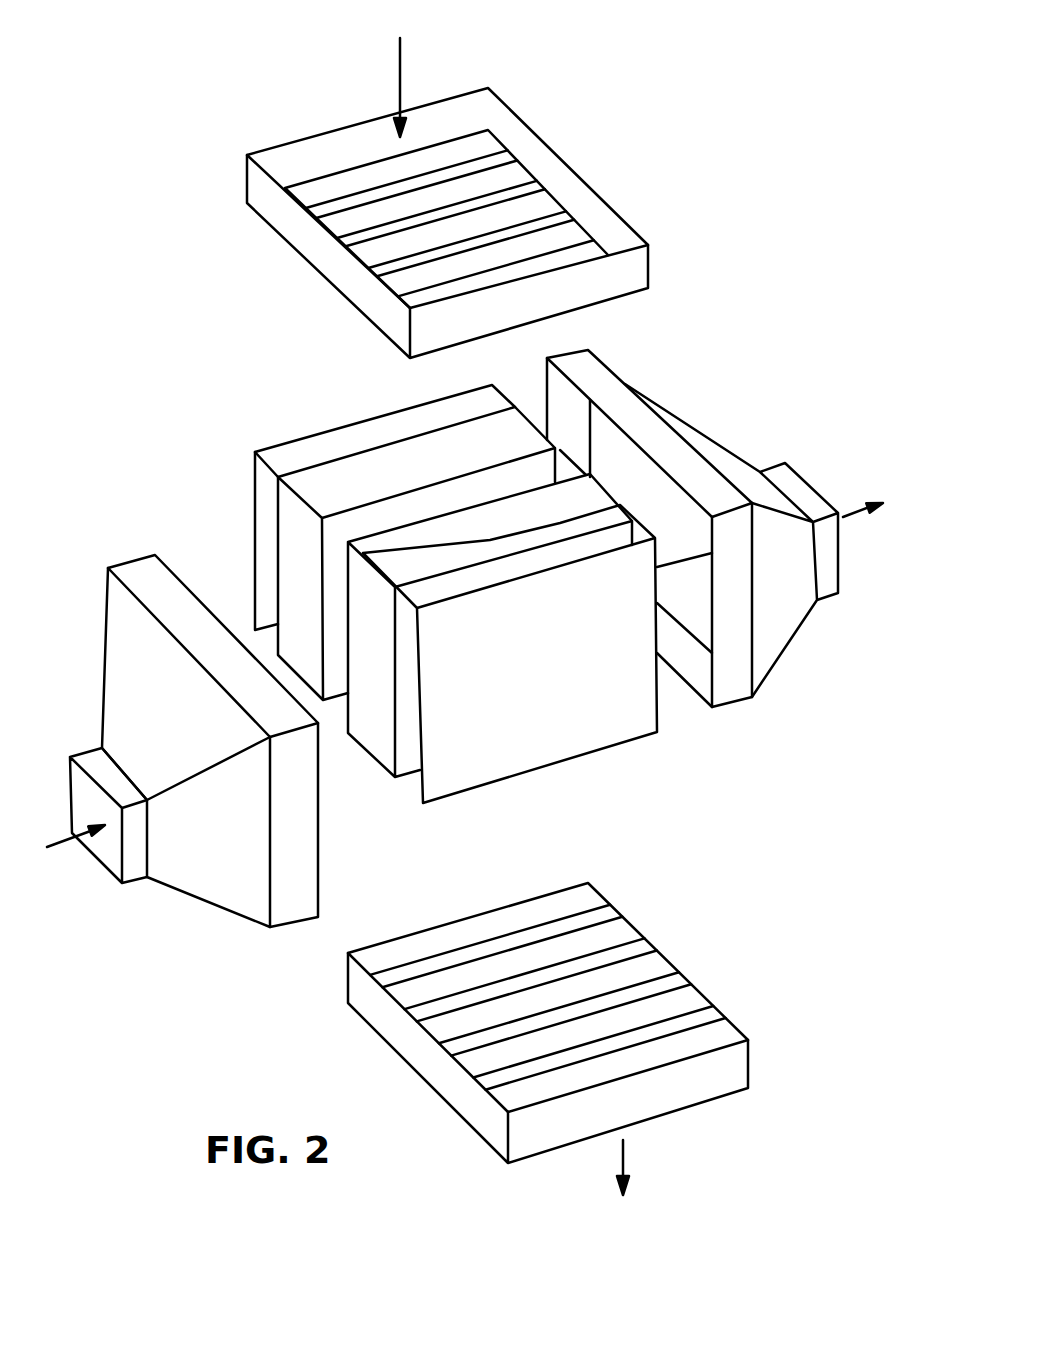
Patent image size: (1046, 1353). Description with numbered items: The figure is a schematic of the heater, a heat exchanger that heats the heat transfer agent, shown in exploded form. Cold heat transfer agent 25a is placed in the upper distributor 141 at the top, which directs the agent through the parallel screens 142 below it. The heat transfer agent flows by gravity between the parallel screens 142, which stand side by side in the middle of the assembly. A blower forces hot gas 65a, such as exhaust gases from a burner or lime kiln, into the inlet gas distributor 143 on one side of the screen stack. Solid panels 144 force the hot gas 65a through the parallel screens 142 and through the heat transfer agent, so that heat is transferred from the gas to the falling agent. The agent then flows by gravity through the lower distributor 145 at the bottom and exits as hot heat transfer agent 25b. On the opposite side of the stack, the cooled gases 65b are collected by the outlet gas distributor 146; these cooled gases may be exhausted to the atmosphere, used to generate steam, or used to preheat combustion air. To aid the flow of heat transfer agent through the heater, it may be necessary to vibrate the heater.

The cold heat transfer agent 25a is at (397, 73).
The hot heat transfer agent 25b is at (624, 1185).
The hot gas 65a is at (76, 853).
The cooled gases 65b is at (881, 503).
The upper distributor 141 is at (585, 178).
The parallel screens 142 is at (330, 470).
The inlet gas distributor 143 is at (252, 920).
The solid panels 144 is at (377, 757).
The lower distributor 145 is at (708, 998).
The outlet gas distributor 146 is at (782, 657).